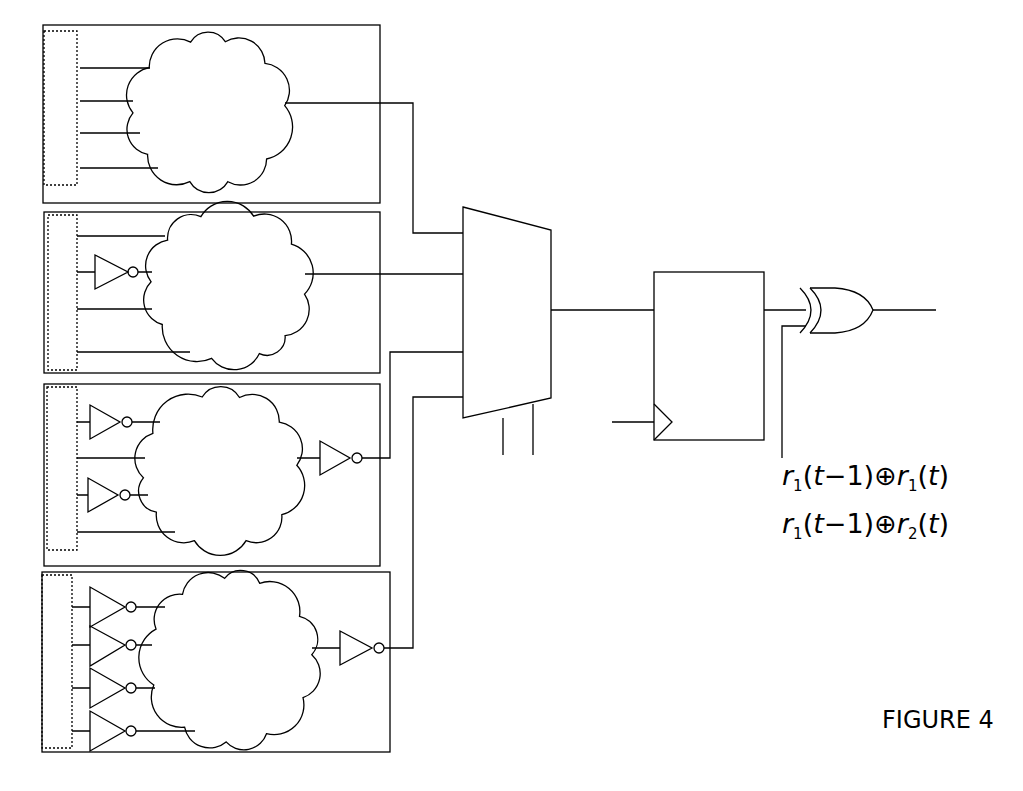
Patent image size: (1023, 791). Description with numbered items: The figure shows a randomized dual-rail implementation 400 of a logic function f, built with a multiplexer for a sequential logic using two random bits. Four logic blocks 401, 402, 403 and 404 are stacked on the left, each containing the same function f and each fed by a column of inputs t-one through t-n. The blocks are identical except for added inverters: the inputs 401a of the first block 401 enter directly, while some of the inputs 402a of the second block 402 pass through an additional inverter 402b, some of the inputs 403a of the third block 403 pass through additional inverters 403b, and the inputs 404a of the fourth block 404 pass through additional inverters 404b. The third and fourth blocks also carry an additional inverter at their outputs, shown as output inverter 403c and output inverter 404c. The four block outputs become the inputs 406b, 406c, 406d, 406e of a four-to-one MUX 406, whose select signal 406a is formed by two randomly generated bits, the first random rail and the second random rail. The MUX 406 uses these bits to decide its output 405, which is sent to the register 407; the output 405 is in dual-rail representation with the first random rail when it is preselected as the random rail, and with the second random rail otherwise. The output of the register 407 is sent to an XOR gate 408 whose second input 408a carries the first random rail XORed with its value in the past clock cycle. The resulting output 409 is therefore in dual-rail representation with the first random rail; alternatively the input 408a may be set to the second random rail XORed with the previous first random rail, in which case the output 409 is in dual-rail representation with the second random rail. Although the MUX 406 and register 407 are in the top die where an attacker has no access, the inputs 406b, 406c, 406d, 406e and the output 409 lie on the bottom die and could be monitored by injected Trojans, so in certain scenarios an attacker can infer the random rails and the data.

The randomized dual-rail implementation 400 is at (581, 754).
The logic block 401 is at (211, 114).
The inputs 401a is at (60, 108).
The logic block 402 is at (212, 287).
The inputs 402a is at (62, 292).
The inverter 402b is at (123, 268).
The logic block 403 is at (212, 475).
The inputs 403a is at (62, 468).
The inverters 403b is at (118, 454).
The output inverter 403c is at (346, 445).
The logic block 404 is at (216, 661).
The inputs 404a is at (57, 661).
The inverters 404b is at (120, 667).
The output inverter 404c is at (363, 636).
The MUX output 405 is at (602, 299).
The 4:1 MUX 406 is at (507, 306).
The select signal 406a is at (519, 440).
The MUX input 406b is at (374, 168).
The MUX input 406c is at (384, 265).
The MUX input 406d is at (412, 395).
The MUX input 406e is at (423, 512).
The register 407 is at (688, 345).
The XOR gate 408 is at (818, 301).
The second input 408a is at (803, 392).
The output 409 is at (904, 298).